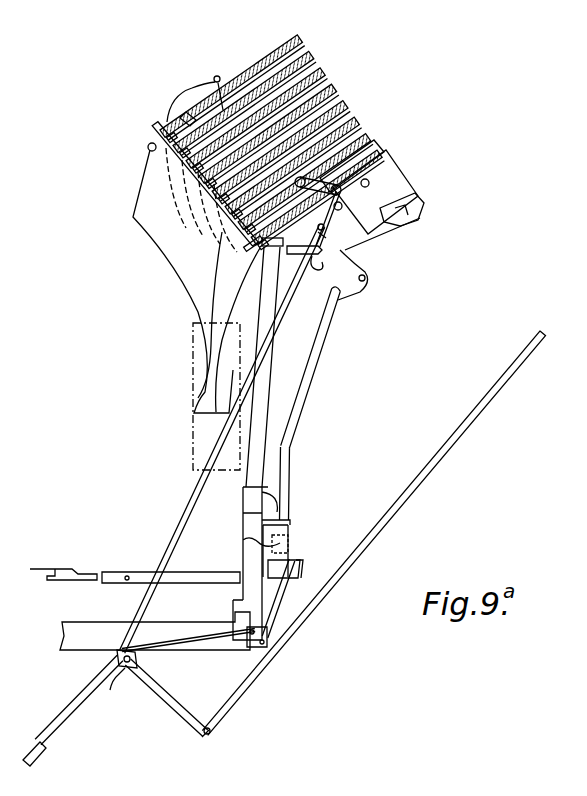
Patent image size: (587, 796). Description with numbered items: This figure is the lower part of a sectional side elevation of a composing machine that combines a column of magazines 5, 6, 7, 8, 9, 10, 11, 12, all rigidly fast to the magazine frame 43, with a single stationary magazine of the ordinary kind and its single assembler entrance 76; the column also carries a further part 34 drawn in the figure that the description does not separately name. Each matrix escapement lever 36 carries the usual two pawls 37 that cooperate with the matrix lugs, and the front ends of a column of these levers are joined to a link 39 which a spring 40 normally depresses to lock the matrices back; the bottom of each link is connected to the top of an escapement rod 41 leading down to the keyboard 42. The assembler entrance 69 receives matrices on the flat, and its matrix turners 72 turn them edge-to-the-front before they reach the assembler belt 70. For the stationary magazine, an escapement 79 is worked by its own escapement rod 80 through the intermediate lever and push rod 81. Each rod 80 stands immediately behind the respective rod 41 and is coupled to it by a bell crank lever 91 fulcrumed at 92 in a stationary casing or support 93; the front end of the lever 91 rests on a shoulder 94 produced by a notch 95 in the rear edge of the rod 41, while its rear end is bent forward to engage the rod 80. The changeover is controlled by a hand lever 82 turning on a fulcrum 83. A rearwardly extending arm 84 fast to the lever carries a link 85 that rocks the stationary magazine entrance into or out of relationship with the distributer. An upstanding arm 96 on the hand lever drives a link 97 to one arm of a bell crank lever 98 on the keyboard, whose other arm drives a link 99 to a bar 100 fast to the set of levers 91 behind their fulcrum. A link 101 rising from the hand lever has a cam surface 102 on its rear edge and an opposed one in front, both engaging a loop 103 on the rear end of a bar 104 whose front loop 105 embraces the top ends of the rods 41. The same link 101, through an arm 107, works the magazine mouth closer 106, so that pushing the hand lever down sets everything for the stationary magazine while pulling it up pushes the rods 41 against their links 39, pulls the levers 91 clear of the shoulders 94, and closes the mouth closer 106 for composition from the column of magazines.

The magazine 5 is at (298, 42).
The magazine 6 is at (298, 61).
The magazine 7 is at (314, 72).
The magazine 8 is at (331, 87).
The magazine 9 is at (326, 100).
The magazine 10 is at (336, 115).
The magazine 11 is at (349, 129).
The magazine 12 is at (362, 144).
The roller strip 34 is at (312, 60).
The matrix escapement lever 36 is at (188, 117).
The pawls 37 is at (222, 80).
The link 39 is at (156, 132).
The spring 40 is at (183, 97).
The escapement rod 41 is at (272, 362).
The keyboard 42 is at (123, 573).
The magazine frame 43 is at (410, 190).
The assembler entrance 69 is at (183, 278).
The assembler belt 70 is at (193, 448).
The matrix turners 72 is at (203, 313).
The assembler entrance 76 is at (233, 304).
The escapement 79 is at (405, 222).
The escapement rod 80 is at (326, 336).
The intermediate lever and push rod 81 is at (362, 283).
The hand lever 82 is at (84, 716).
The fulcrum 83 is at (127, 673).
The rearwardly extending arm 84 is at (186, 690).
The link 85 is at (410, 490).
The bell crank lever 91 is at (283, 569).
The fulcrum 92 is at (290, 547).
The casing or support 93 is at (290, 531).
The shoulder 94 is at (243, 560).
The notch 95 is at (243, 531).
The upstanding arm 96 is at (118, 658).
The link 97 is at (208, 641).
The bell crank lever 98 is at (265, 647).
The link 99 is at (282, 598).
The bar 100 is at (298, 563).
The link 101 is at (194, 493).
The cam surface 102 is at (314, 262).
The loop 103 is at (320, 226).
The bar 104 is at (318, 262).
The loop 105 is at (262, 250).
The magazine mouth closer 106 is at (305, 196).
The arm 107 is at (378, 166).